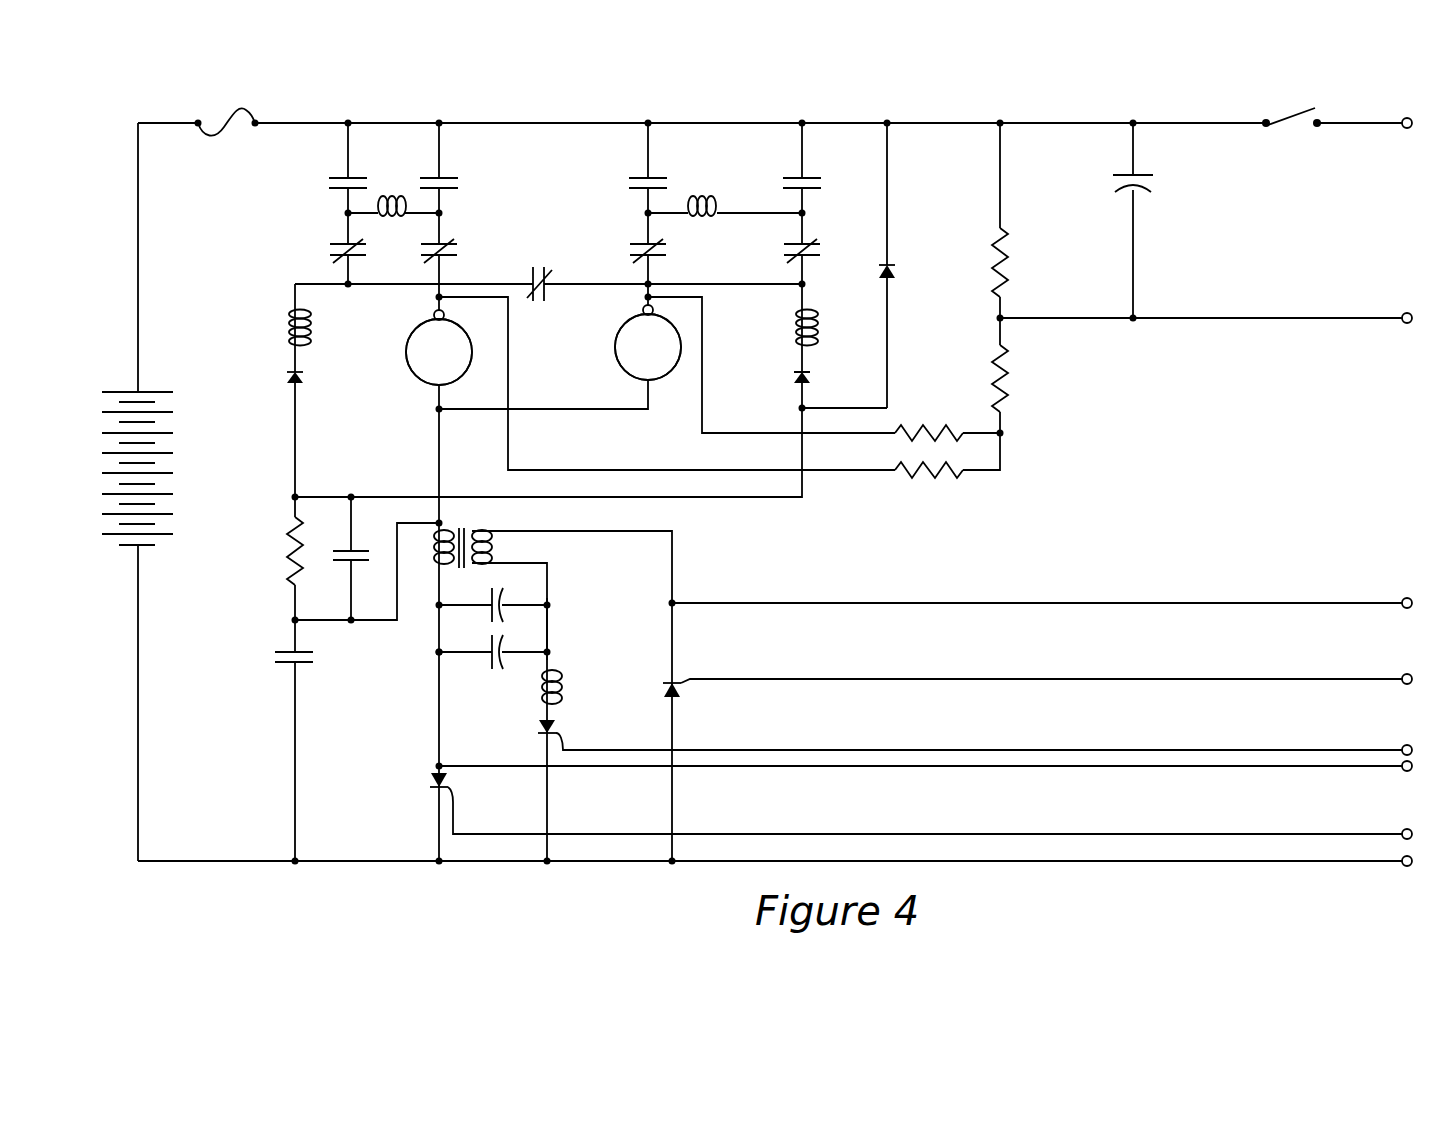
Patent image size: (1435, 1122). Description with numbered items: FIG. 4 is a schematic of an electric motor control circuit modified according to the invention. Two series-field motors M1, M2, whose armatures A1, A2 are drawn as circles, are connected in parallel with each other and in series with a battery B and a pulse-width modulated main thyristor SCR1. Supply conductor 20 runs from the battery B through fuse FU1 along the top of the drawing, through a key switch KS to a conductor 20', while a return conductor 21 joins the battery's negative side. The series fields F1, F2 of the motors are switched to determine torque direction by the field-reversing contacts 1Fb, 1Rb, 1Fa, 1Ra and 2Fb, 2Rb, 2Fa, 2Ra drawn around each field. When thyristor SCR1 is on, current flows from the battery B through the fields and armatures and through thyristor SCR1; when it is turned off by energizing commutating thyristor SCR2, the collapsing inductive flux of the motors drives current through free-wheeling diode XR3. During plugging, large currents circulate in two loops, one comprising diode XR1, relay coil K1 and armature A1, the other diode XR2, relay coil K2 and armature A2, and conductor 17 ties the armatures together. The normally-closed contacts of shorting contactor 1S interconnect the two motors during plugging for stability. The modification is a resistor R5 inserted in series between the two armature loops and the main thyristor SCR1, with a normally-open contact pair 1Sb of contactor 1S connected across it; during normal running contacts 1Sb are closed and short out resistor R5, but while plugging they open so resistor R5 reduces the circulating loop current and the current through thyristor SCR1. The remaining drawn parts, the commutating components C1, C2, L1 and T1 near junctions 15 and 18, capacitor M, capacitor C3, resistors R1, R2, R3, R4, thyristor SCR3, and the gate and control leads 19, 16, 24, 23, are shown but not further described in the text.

The positive supply conductor 20 is at (775, 344).
The positive supply conductor beyond key switch 20' is at (1364, 109).
The negative/return conductor 21 is at (1326, 318).
The motor common conductor 17 is at (580, 411).
The commutating capacitor junction 15 is at (550, 622).
The capacitor junction node 18 is at (436, 652).
The SCR2 gate lead 19 is at (1260, 750).
The SCR1 anode conductor 16 is at (1234, 768).
The SCR3 gate lead 24 is at (1220, 679).
The SCR1 gate lead 23 is at (1148, 836).
The battery B is at (156, 468).
The fuse FU1 is at (212, 138).
The key switch KS is at (1302, 140).
The forward contactor contact 1Fb is at (337, 178).
The reverse contactor contact 1Rb is at (449, 178).
The forward contactor contact 1Fa is at (336, 244).
The reverse contactor contact 1Ra is at (455, 244).
The series field F1 is at (396, 198).
The forward contactor contact 2Fb is at (634, 180).
The reverse contactor contact 2Rb is at (806, 178).
The forward contactor contact 2Fa is at (634, 246).
The reverse contactor contact 2Ra is at (812, 244).
The series field F2 is at (722, 198).
The shorting contactor 1S is at (542, 305).
The normally-open contact pair 1Sb is at (364, 550).
The plugging relay coil K1 is at (288, 330).
The plugging relay coil K2 is at (796, 326).
The diode XR1 is at (288, 378).
The diode XR2 is at (795, 378).
The free-wheeling diode XR3 is at (896, 270).
The series-field motor M1 is at (400, 341).
The series-field motor M2 is at (611, 326).
The armature A1 is at (439, 352).
The armature A2 is at (648, 347).
The resistor R1 is at (1004, 233).
The resistor R2 is at (1006, 365).
The resistor R3 is at (900, 428).
The resistor R4 is at (942, 505).
The resistor R5 is at (288, 538).
The capacitor M is at (286, 652).
The commutating capacitor C1 is at (550, 594).
The commutating capacitor C2 is at (549, 645).
The capacitor C3 is at (1138, 178).
The pulse transformer T1 is at (494, 552).
The commutating inductor L1 is at (541, 690).
The main thyristor SCR1 is at (432, 780).
The commutating thyristor SCR2 is at (538, 727).
The thyristor SCR3 is at (684, 696).